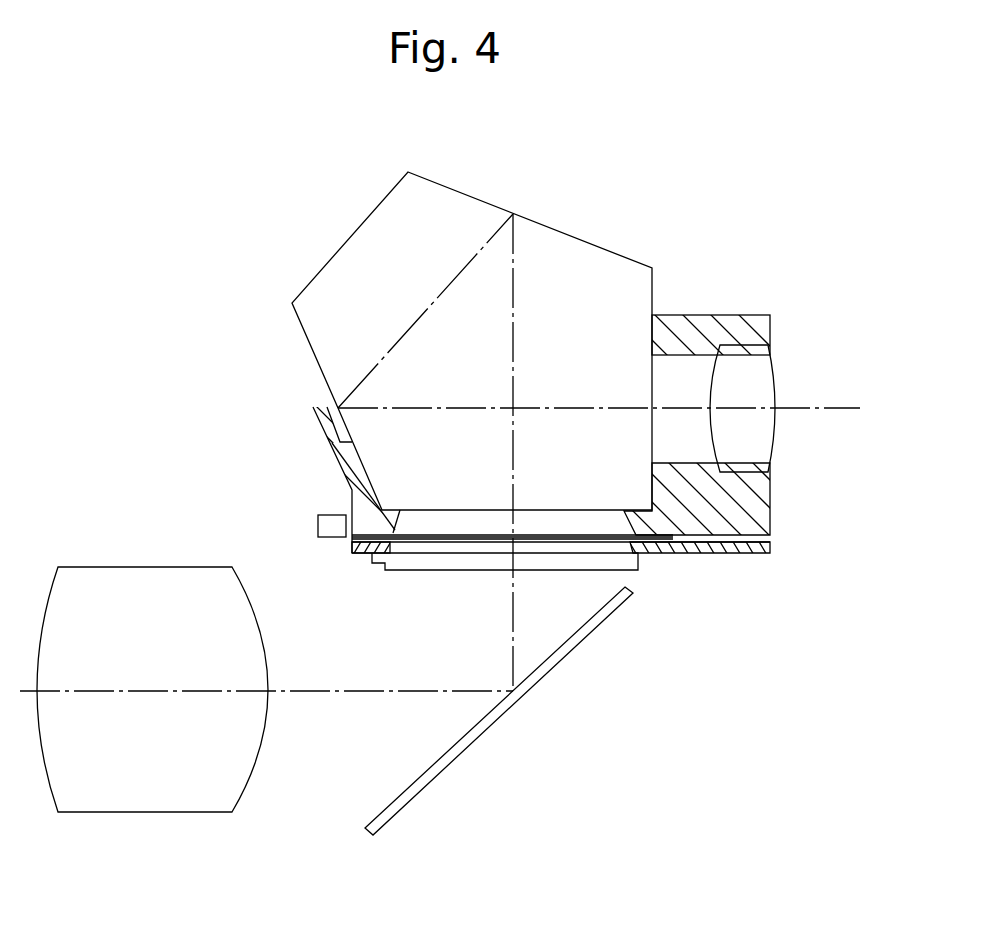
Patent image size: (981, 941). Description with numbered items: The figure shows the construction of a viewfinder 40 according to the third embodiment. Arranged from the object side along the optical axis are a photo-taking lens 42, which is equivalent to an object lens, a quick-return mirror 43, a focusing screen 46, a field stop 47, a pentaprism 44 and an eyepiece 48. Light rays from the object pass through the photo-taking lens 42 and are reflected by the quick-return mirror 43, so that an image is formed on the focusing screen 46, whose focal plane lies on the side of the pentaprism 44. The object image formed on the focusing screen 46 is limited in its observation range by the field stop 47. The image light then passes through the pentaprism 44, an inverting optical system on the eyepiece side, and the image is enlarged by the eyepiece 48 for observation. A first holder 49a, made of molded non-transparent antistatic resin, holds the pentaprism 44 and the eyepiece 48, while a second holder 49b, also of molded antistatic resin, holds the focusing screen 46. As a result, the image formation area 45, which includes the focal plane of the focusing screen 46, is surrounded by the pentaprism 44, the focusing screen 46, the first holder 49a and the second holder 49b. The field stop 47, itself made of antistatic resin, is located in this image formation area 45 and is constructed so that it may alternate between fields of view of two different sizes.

The viewfinder 40 is at (762, 270).
The photo-taking lens 42 is at (148, 813).
The quick-return mirror 43 is at (446, 768).
The pentaprism 44 is at (588, 242).
The image formation area 45 is at (425, 522).
The focusing screen 46 is at (412, 571).
The field stop 47 is at (468, 541).
The eyepiece 48 is at (776, 443).
The first holder 49a is at (703, 315).
The second holder 49b is at (703, 556).